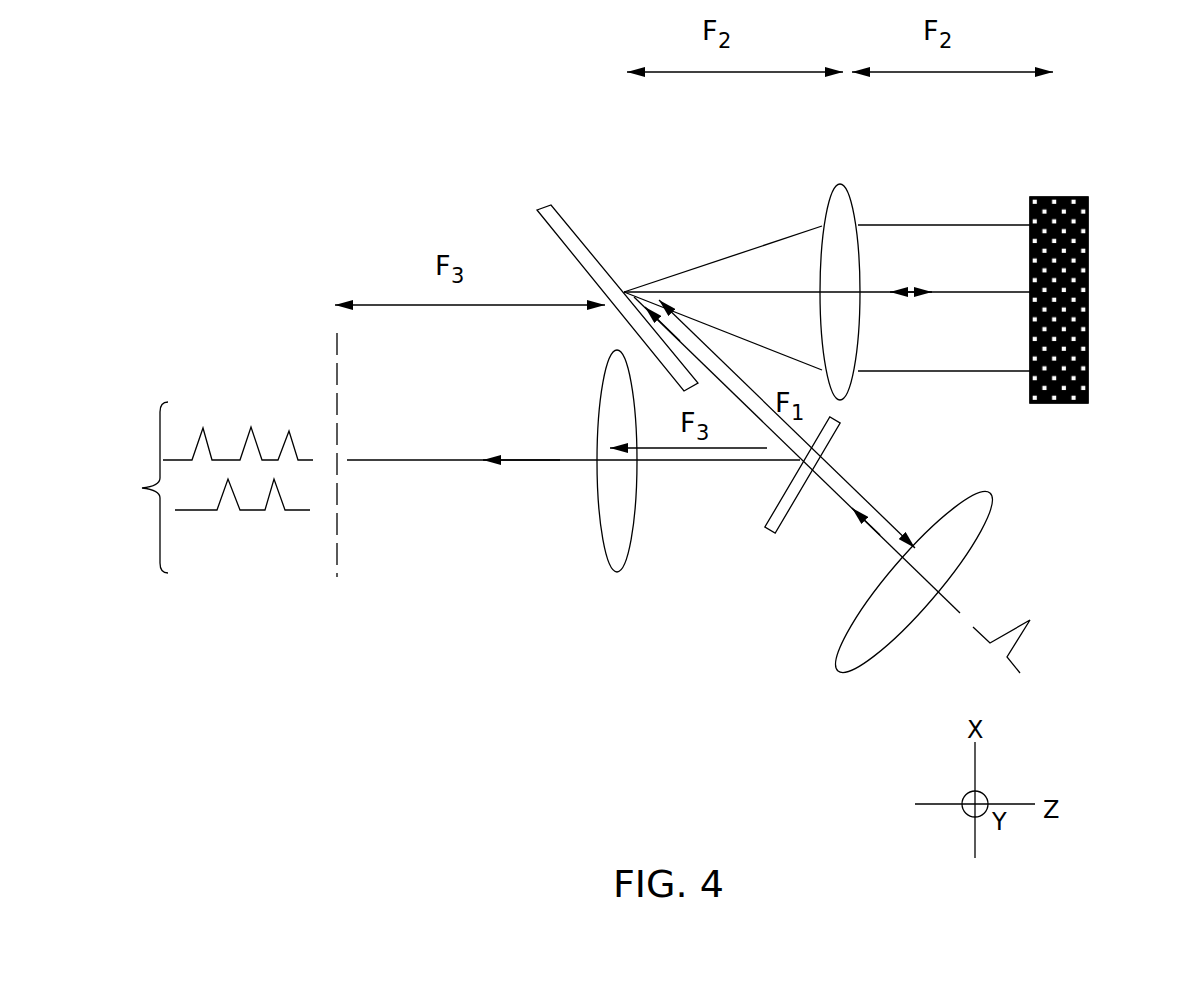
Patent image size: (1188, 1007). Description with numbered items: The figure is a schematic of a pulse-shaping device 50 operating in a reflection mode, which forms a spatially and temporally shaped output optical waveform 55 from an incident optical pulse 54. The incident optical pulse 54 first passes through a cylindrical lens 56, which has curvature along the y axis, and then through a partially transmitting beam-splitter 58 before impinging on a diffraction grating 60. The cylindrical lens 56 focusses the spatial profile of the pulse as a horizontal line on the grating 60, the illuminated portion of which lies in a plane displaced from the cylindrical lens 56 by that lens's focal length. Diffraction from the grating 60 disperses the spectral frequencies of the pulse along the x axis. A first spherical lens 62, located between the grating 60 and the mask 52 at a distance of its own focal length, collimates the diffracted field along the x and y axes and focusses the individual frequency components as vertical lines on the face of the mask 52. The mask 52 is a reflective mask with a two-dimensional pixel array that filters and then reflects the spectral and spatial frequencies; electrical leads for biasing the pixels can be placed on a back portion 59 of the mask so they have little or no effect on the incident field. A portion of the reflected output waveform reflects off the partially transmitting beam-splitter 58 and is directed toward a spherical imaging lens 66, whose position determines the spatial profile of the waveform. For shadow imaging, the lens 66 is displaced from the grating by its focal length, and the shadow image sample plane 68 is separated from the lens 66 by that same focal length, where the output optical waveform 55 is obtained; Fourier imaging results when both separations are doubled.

The pulse-shaping device 50 is at (480, 135).
The mask 52 is at (1068, 178).
The incident optical pulse 54 is at (1013, 648).
The output optical waveform 55 is at (203, 487).
The cylindrical lens 56 is at (987, 513).
The partially transmitting beam-splitter 58 is at (833, 442).
The back portion of the reflective mask 59 is at (1089, 242).
The diffraction grating 60 is at (573, 232).
The first spherical lens 62 is at (852, 218).
The spherical imaging lens 66 is at (633, 542).
The shadow image sample plane 68 is at (339, 345).